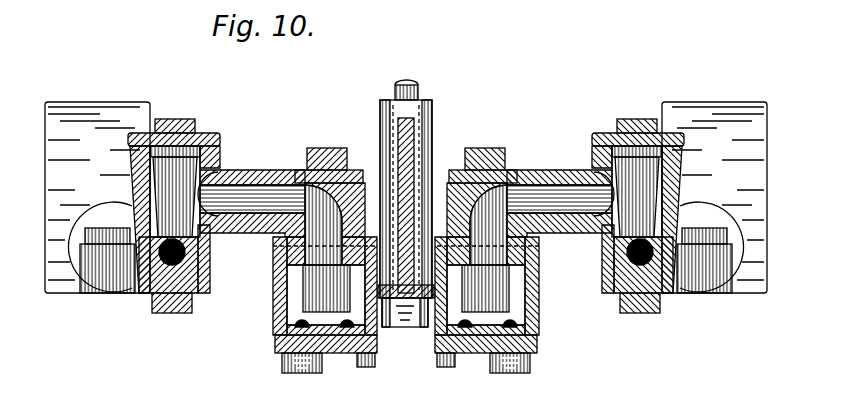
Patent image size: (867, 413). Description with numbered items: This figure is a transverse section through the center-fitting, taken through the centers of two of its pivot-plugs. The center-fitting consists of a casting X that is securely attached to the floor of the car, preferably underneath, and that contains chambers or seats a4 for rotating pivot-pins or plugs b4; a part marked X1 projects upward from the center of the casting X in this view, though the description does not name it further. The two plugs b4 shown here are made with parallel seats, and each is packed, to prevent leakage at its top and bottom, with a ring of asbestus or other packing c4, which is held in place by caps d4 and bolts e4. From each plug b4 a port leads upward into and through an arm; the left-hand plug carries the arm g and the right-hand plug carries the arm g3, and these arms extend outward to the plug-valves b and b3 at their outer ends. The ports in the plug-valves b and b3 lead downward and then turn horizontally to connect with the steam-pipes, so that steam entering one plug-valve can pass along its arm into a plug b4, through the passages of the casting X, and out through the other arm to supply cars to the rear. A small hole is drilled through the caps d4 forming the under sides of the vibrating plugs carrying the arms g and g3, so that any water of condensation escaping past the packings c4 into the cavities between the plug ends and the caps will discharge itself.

The plug-valve b is at (175, 197).
The plug-valve b3 is at (637, 197).
The arm g is at (248, 222).
The arm g3 is at (570, 225).
The cap d4 is at (300, 232).
The packing ring c4 is at (287, 262).
The chamber or seat a4 is at (288, 303).
The bolt e4 is at (284, 365).
The rotating pivot-pin or plug b4 is at (365, 352).
The casting X is at (406, 239).
The valve stem X1 is at (420, 95).